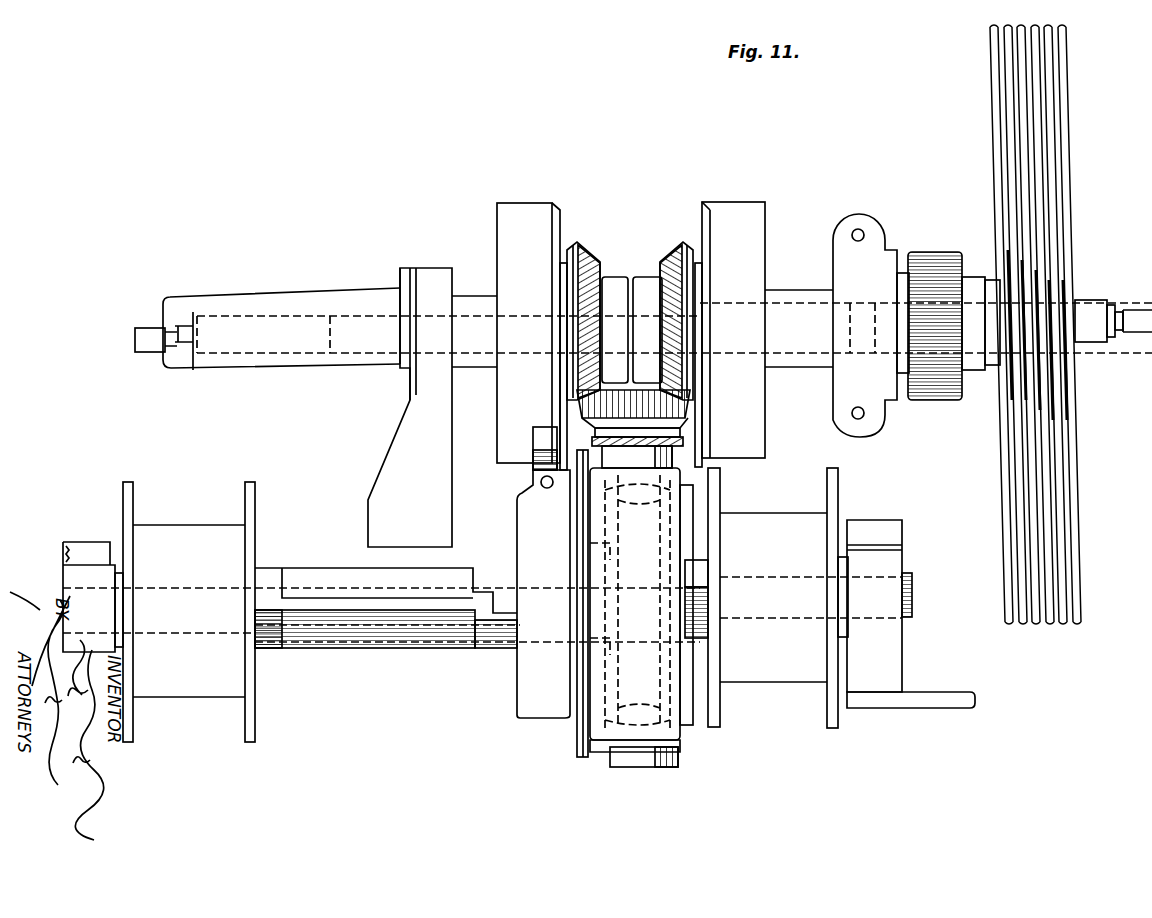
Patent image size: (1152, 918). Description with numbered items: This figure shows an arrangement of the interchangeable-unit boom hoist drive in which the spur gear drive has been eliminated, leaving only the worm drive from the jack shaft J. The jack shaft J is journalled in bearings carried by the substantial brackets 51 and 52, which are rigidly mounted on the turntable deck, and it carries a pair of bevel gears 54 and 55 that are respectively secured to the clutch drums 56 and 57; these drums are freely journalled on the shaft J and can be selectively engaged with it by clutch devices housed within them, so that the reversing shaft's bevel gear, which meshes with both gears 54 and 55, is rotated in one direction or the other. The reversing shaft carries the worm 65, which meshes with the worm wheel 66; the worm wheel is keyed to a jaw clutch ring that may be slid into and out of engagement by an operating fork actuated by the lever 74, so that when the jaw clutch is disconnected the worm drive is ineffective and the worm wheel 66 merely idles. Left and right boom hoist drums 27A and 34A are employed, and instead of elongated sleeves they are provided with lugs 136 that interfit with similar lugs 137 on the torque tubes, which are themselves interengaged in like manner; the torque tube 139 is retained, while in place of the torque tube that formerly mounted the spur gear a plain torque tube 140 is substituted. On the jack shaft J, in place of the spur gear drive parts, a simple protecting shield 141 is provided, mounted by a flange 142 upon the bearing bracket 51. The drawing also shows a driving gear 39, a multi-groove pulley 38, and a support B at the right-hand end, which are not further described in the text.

The jack shaft J is at (135, 335).
The protecting shield 141 is at (290, 301).
The flange 142 is at (400, 277).
The bracket 51 is at (430, 270).
The clutch drum 56 is at (530, 194).
The bevel gear 54 is at (586, 250).
The bevel gear 55 is at (678, 250).
The clutch drum 57 is at (728, 204).
The bracket 52 is at (833, 238).
The gear 39 is at (925, 400).
The pulley stack 38 is at (1078, 470).
The left boom hoist drum 27A is at (182, 688).
The lugs 136 is at (269, 646).
The plain torque tube 140 is at (394, 650).
The torque tube 139 is at (500, 648).
The lever 74 is at (533, 438).
The worm 65 is at (700, 652).
The lugs 137 is at (708, 590).
The worm wheel 66 is at (610, 722).
The right boom hoist drum 34A is at (748, 680).
The bracket B is at (912, 590).